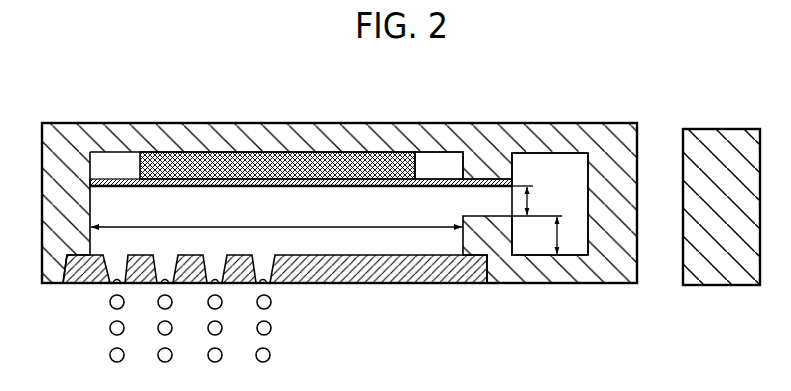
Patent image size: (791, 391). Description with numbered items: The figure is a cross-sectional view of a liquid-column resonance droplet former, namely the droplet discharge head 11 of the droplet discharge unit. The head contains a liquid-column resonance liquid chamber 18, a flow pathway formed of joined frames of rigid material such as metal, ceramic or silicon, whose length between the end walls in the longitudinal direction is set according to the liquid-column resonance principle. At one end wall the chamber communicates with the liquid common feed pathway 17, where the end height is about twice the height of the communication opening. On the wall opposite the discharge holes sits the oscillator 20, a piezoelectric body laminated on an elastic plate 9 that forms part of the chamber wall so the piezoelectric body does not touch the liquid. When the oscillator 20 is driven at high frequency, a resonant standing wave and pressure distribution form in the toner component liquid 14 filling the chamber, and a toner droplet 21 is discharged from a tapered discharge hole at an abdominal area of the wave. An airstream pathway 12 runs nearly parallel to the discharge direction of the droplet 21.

The elastic plate 9 is at (433, 176).
The droplet discharge head 11 is at (613, 123).
The airstream pathway 12 is at (661, 279).
The toner component liquid 14 is at (359, 243).
The liquid common feed pathway 17 is at (557, 170).
The liquid-column resonance liquid chamber 18 is at (340, 198).
The oscillator 20 is at (252, 153).
The toner droplet 21 is at (270, 355).